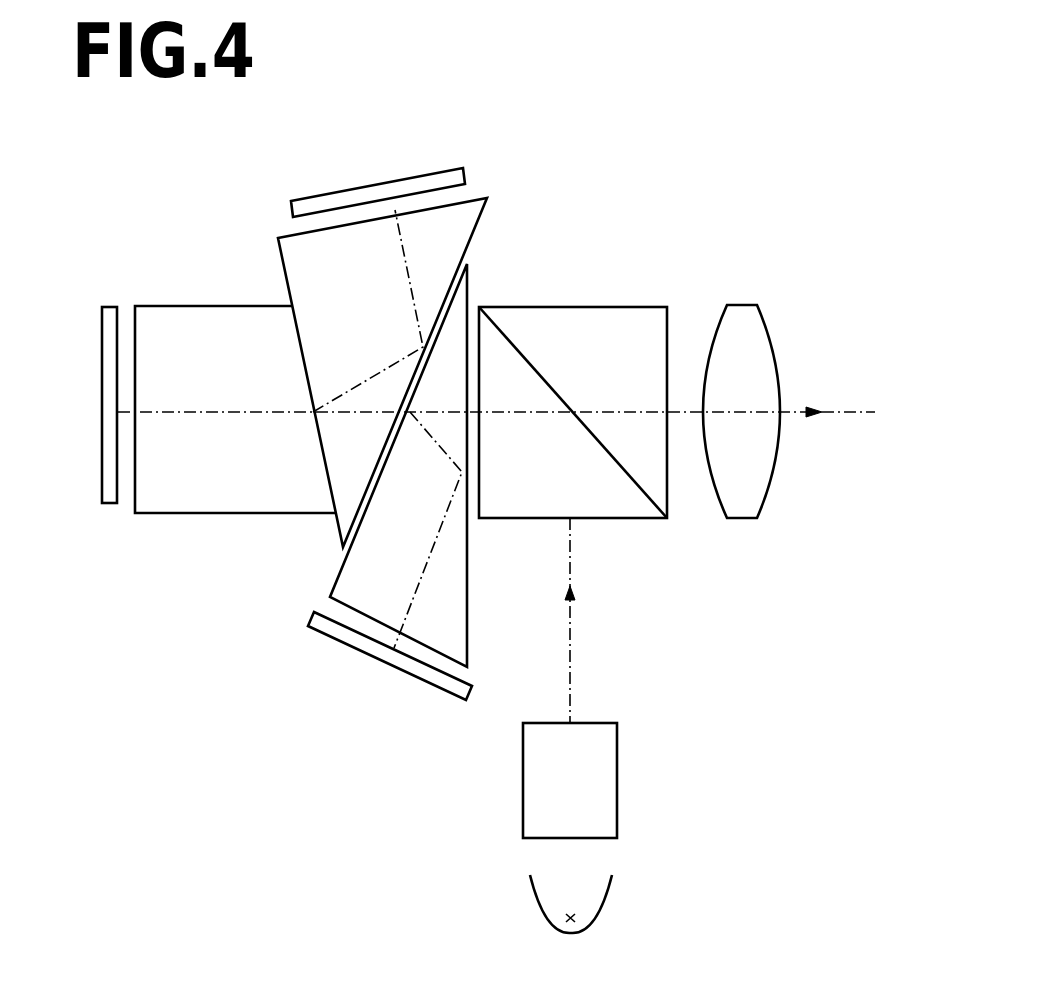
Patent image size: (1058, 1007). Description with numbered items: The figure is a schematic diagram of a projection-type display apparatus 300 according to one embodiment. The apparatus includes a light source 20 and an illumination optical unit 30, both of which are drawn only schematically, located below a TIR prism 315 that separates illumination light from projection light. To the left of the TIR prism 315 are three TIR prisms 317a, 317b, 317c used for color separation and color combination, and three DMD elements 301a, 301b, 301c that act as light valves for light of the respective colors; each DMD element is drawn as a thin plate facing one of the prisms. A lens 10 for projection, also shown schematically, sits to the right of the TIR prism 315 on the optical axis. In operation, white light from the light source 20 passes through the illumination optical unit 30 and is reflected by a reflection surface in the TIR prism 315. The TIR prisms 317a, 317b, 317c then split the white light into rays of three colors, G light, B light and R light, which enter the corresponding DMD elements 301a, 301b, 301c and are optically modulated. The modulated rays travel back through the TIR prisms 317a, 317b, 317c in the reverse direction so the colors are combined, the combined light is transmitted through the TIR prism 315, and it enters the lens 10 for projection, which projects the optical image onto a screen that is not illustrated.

The projection-type display apparatus 300 is at (668, 148).
The DMD element 301a is at (352, 640).
The DMD element 301b is at (338, 194).
The DMD element 301c is at (107, 470).
The TIR prism 317a is at (465, 300).
The TIR prism 317b is at (470, 233).
The TIR prism 317c is at (192, 307).
The TIR prism 315 is at (630, 313).
The lens for projection 10 is at (742, 303).
The illumination optical unit 30 is at (618, 793).
The light source 20 is at (603, 912).